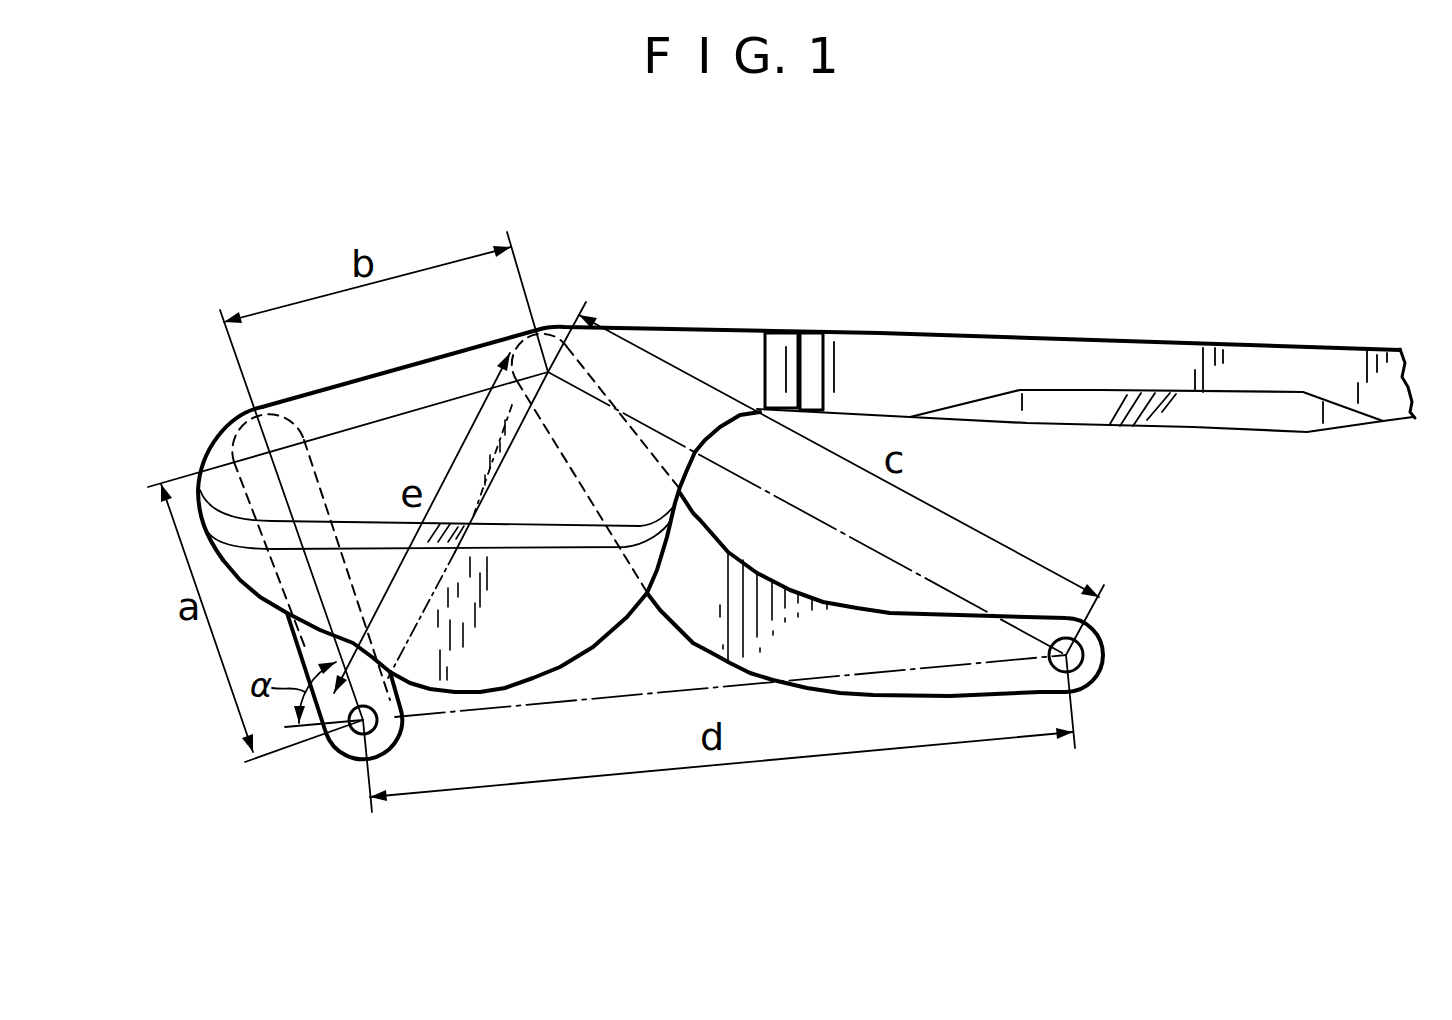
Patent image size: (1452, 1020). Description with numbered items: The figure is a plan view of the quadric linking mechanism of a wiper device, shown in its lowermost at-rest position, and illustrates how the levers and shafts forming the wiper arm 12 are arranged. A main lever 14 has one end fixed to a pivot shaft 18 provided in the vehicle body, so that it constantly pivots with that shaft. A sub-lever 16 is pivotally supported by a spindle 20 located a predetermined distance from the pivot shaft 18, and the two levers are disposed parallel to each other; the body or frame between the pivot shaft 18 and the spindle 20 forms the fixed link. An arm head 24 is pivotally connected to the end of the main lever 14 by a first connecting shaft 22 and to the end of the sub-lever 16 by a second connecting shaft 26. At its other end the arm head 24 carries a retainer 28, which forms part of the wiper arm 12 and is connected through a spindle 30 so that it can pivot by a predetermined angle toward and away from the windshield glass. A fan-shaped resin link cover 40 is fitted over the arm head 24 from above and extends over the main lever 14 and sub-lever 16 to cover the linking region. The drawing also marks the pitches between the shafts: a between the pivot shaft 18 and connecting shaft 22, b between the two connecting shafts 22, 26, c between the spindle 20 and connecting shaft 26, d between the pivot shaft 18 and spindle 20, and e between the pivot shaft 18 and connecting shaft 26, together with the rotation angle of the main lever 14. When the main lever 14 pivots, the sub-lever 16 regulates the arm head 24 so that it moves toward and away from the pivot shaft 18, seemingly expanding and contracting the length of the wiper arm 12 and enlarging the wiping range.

The wiper arm 12 is at (929, 290).
The main lever 14 is at (290, 647).
The sub-lever 16 is at (868, 697).
The pivot shaft 18 is at (350, 757).
The spindle 20 is at (1083, 648).
The connecting shaft 22 is at (270, 452).
The arm head 24 is at (662, 330).
The connecting shaft 26 is at (549, 372).
The retainer 28 is at (1158, 347).
The spindle 30 is at (800, 333).
The link cover 40 is at (528, 683).